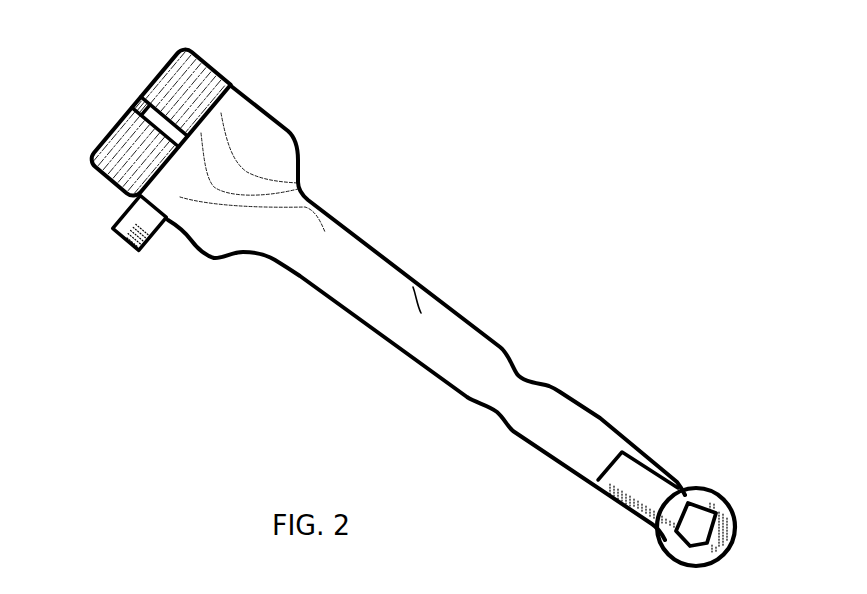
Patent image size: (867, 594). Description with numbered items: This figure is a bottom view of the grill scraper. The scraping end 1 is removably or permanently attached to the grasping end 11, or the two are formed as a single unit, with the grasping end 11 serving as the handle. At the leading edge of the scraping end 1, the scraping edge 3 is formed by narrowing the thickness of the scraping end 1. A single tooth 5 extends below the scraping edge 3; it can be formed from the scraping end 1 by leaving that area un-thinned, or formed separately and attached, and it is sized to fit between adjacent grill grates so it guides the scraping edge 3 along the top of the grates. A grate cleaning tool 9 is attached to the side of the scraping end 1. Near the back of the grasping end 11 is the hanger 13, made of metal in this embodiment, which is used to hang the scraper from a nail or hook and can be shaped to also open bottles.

The scraping end 1 is at (249, 219).
The scraping edge 3 is at (165, 67).
The tooth 5 is at (158, 127).
The grate cleaning tool 9 is at (125, 245).
The grasping end 11 is at (572, 432).
The hanger 13 is at (727, 543).